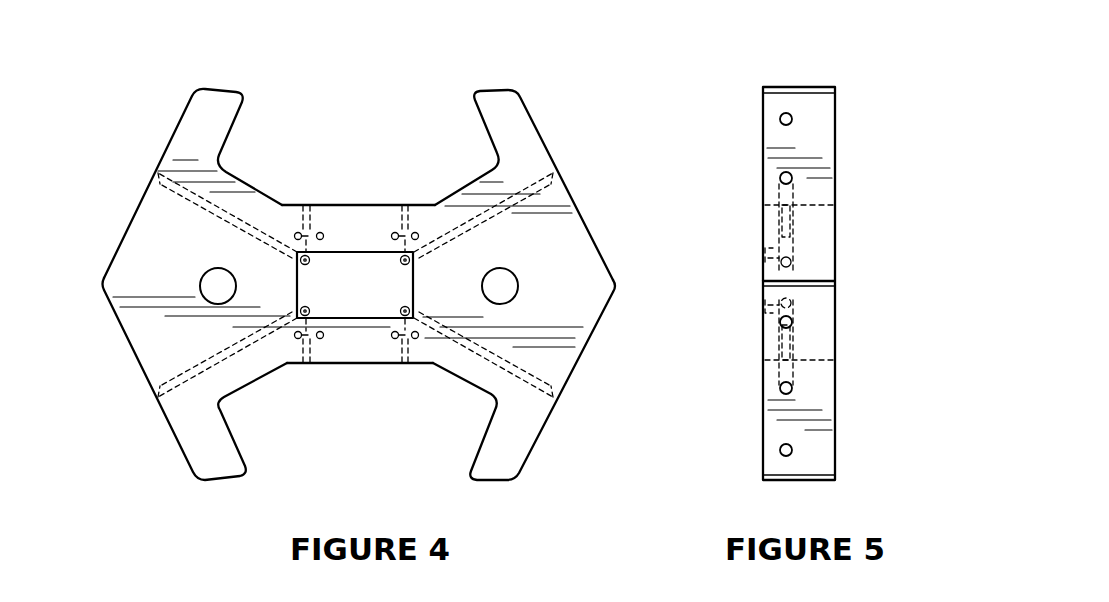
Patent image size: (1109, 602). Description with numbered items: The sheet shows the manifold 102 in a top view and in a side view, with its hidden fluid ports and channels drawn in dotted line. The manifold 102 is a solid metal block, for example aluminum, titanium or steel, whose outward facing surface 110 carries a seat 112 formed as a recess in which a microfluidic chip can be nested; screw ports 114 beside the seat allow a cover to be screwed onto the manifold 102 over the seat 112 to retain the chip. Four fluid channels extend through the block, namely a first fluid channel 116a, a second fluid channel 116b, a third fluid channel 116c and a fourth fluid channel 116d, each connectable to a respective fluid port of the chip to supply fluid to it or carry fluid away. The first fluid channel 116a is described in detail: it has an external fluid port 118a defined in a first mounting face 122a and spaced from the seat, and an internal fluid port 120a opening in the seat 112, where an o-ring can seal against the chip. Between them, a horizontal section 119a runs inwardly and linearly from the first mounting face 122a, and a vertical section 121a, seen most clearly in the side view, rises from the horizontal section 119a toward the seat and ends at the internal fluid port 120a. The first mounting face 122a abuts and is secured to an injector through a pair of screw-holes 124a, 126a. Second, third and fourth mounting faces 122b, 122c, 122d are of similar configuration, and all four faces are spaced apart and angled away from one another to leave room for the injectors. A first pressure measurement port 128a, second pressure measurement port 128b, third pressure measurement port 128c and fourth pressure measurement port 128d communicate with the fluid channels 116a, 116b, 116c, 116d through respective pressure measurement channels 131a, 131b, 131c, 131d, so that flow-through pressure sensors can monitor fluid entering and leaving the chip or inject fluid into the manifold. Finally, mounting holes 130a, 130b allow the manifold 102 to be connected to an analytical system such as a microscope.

In FIG. 4, the manifold 102 is at (357, 92).
In FIG. 5, the manifold 102 is at (872, 94).
In FIG. 4, the outward facing surface 110 is at (557, 236).
In FIG. 5, the outward facing surface 110 is at (762, 197).
In FIG. 4, the seat 112 is at (303, 338).
In FIG. 4, the screw ports 114 is at (419, 237).
In FIG. 4, the first fluid channel 116a is at (533, 382).
In FIG. 5, the first fluid channel 116a is at (793, 365).
In FIG. 4, the second fluid channel 116b is at (522, 188).
In FIG. 5, the second fluid channel 116b is at (792, 197).
In FIG. 4, the third fluid channel 116c is at (183, 187).
In FIG. 4, the fourth fluid channel 116d is at (183, 383).
In FIG. 4, the external fluid port 118a is at (555, 388).
In FIG. 5, the external fluid port 118a is at (790, 388).
In FIG. 4, the horizontal section 119a is at (512, 378).
In FIG. 5, the horizontal section 119a is at (780, 363).
In FIG. 4, the internal fluid port 120a is at (402, 313).
In FIG. 5, the vertical section 121a is at (793, 277).
In FIG. 4, the first mounting face 122a is at (603, 292).
In FIG. 5, the first mounting face 122a is at (805, 352).
In FIG. 4, the second mounting face 122b is at (603, 256).
In FIG. 5, the second mounting face 122b is at (823, 128).
In FIG. 4, the third mounting face 122c is at (137, 212).
In FIG. 4, the fourth mounting face 122d is at (135, 355).
In FIG. 5, the screw-hole 124a is at (792, 450).
In FIG. 5, the screw-hole 126a is at (793, 310).
In FIG. 4, the first pressure measurement port 128a is at (402, 346).
In FIG. 4, the second pressure measurement port 128b is at (407, 225).
In FIG. 4, the third pressure measurement port 128c is at (309, 225).
In FIG. 4, the fourth pressure measurement port 128d is at (340, 305).
In FIG. 4, the mounting hole 130a is at (233, 265).
In FIG. 4, the mounting hole 130b is at (510, 303).
In FIG. 4, the pressure measurement channel 131a is at (413, 338).
In FIG. 5, the pressure measurement channel 131a is at (793, 332).
In FIG. 4, the pressure measurement channel 131b is at (407, 225).
In FIG. 5, the pressure measurement channel 131b is at (790, 225).
In FIG. 4, the pressure measurement channel 131c is at (308, 225).
In FIG. 4, the pressure measurement channel 131d is at (296, 338).